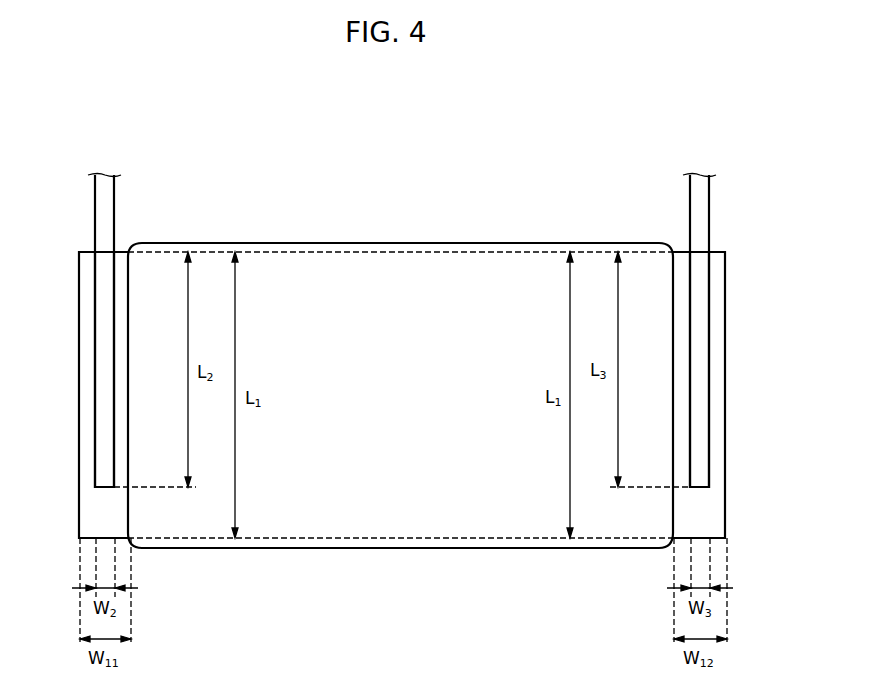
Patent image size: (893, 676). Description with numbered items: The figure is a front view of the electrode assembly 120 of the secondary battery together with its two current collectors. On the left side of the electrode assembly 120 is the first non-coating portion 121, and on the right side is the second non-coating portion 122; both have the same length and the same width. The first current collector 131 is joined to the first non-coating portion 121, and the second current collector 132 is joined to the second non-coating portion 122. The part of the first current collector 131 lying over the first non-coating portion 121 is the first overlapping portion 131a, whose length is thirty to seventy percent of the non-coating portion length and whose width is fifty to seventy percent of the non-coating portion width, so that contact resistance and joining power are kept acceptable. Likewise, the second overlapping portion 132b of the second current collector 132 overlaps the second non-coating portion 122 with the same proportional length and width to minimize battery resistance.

The electrode assembly 120 is at (553, 182).
The first non-coating portion 121 is at (80, 404).
The second non-coating portion 122 is at (718, 405).
The first current collector 131 is at (88, 221).
The first overlapping portion 131a is at (105, 329).
The second current collector 132 is at (718, 224).
The second overlapping portion 132b is at (705, 335).